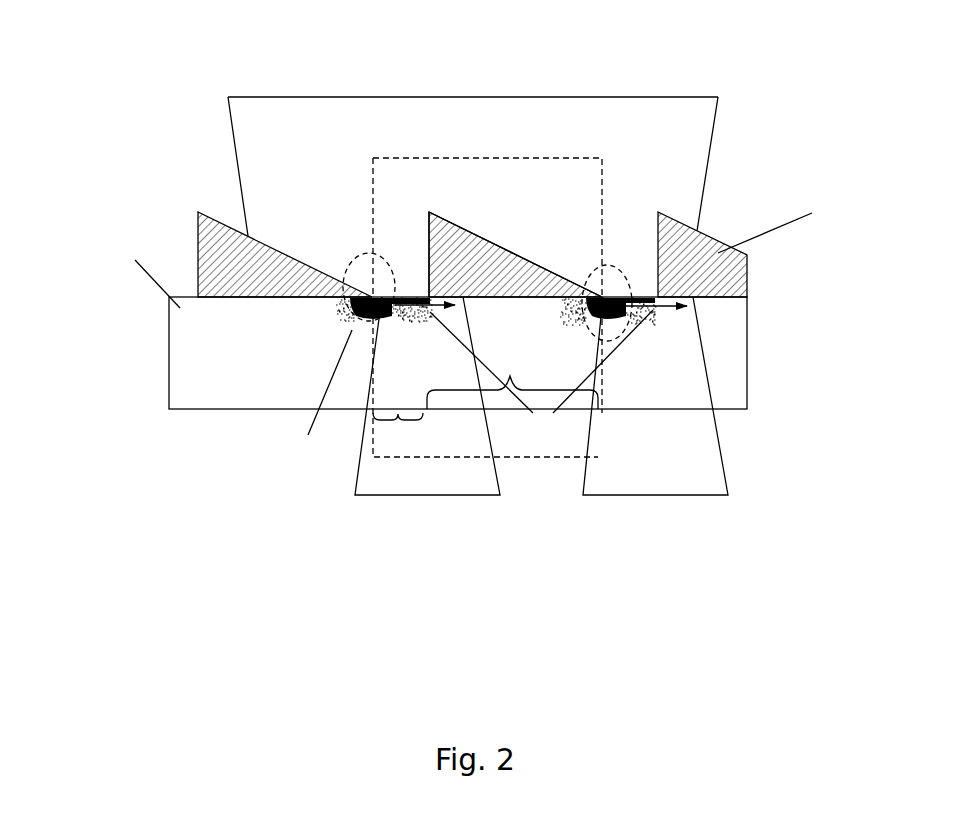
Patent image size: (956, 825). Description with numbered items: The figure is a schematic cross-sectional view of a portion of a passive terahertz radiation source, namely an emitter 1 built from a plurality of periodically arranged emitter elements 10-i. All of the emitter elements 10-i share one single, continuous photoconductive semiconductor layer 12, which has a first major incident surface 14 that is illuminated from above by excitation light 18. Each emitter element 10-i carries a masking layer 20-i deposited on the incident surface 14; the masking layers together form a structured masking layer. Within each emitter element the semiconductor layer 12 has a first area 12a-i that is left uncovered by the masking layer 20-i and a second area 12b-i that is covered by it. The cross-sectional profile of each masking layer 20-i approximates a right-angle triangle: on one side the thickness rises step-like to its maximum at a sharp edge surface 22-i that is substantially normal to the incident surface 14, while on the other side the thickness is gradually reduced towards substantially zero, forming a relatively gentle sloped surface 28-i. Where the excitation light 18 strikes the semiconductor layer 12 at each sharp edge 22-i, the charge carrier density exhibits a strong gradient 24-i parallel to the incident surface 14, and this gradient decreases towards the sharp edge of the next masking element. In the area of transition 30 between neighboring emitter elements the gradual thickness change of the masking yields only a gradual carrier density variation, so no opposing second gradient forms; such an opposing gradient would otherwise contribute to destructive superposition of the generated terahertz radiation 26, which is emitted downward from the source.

The emitter 1 is at (176, 124).
The semiconductor layer 12 is at (180, 350).
The incident surface 14 is at (394, 297).
The excitation light 18 is at (718, 117).
The emitter element 10-i is at (602, 173).
The masking layer 20-i is at (522, 270).
The edge surface 22-i is at (428, 236).
The sloped surface 28-i is at (472, 230).
The gradient 24-i is at (481, 379).
The first area 12a-i is at (398, 429).
The second area 12b-i is at (512, 383).
The terahertz radiation 26 is at (372, 502).
The area of transition 30 is at (350, 263).